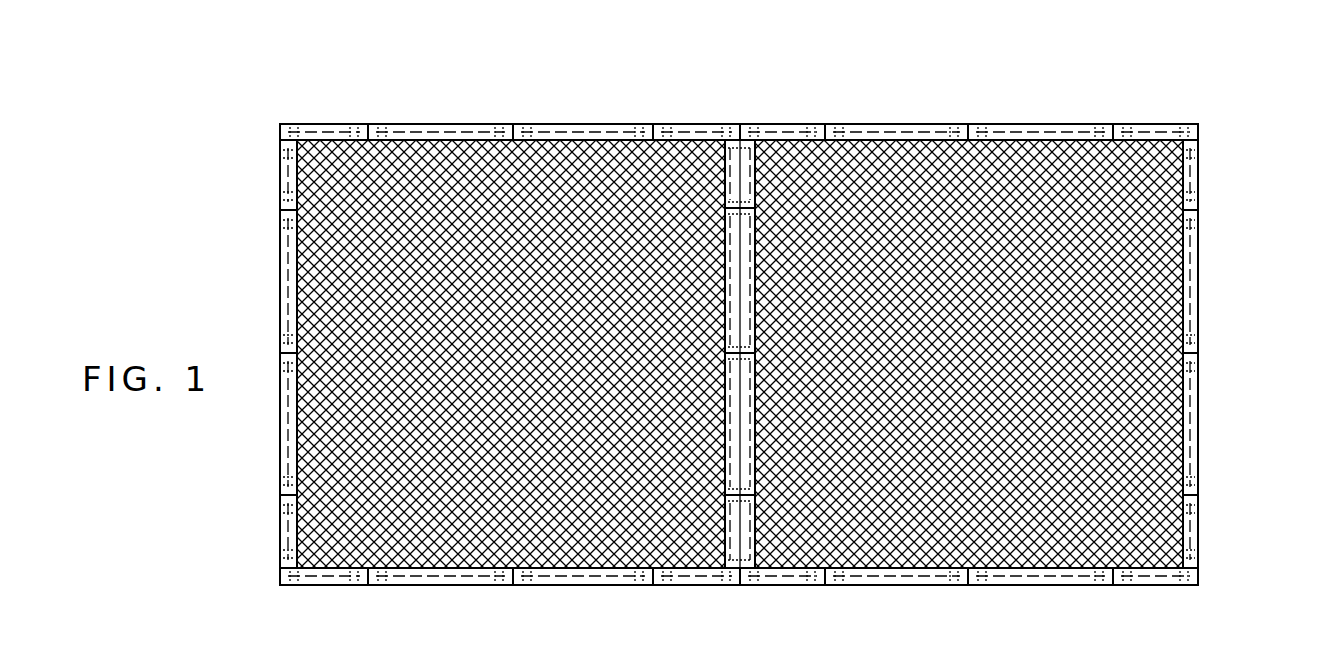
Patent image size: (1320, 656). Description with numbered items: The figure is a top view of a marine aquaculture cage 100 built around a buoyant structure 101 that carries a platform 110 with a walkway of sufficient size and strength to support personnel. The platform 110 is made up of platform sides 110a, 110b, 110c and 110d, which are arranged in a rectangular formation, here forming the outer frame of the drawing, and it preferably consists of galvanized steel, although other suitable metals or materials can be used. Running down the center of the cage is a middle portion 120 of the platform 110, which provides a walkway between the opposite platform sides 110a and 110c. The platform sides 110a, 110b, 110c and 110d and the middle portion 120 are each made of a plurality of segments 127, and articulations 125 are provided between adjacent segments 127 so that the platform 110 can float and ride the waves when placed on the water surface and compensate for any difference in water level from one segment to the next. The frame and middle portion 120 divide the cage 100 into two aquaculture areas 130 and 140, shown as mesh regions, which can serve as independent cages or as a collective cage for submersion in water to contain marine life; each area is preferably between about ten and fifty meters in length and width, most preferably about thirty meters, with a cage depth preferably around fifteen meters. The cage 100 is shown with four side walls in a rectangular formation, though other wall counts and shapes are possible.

The cage 100 is at (1000, 90).
The buoyant structure 101 is at (856, 113).
The platform 110 is at (272, 118).
The platform side 110a is at (540, 116).
The platform side 110b is at (272, 310).
The platform side 110c is at (912, 577).
The platform side 110d is at (1190, 293).
The middle portion 120 is at (528, 398).
The articulation 125 is at (768, 478).
The segment 127 is at (749, 384).
The aquaculture area 130 is at (410, 497).
The aquaculture area 140 is at (955, 515).